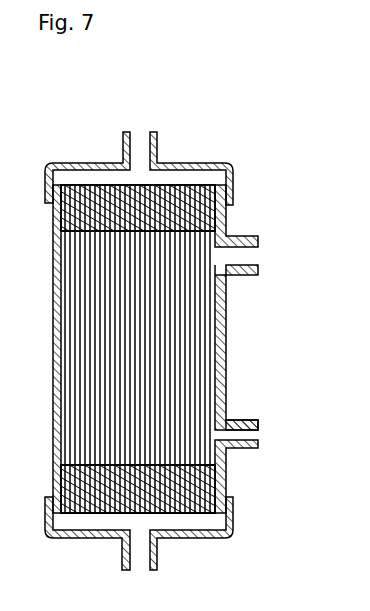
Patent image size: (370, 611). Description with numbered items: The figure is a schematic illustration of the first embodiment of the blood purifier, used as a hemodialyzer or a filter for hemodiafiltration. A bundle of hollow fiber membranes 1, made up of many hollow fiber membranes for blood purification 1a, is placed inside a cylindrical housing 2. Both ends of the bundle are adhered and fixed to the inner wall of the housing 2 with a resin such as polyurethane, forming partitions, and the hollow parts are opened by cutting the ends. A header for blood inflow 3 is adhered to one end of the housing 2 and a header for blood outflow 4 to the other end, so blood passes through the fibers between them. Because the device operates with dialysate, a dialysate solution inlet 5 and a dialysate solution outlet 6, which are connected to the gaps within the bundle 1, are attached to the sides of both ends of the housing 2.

The bundle of hollow fiber membranes 1 is at (176, 349).
The hollow fiber membranes for blood purification 1a is at (190, 402).
The cylindrical housing 2 is at (185, 349).
The header for blood inflow 3 is at (207, 163).
The header for blood outflow 4 is at (187, 538).
The dialysate solution inlet 5 is at (258, 440).
The dialysate solution outlet 6 is at (258, 253).